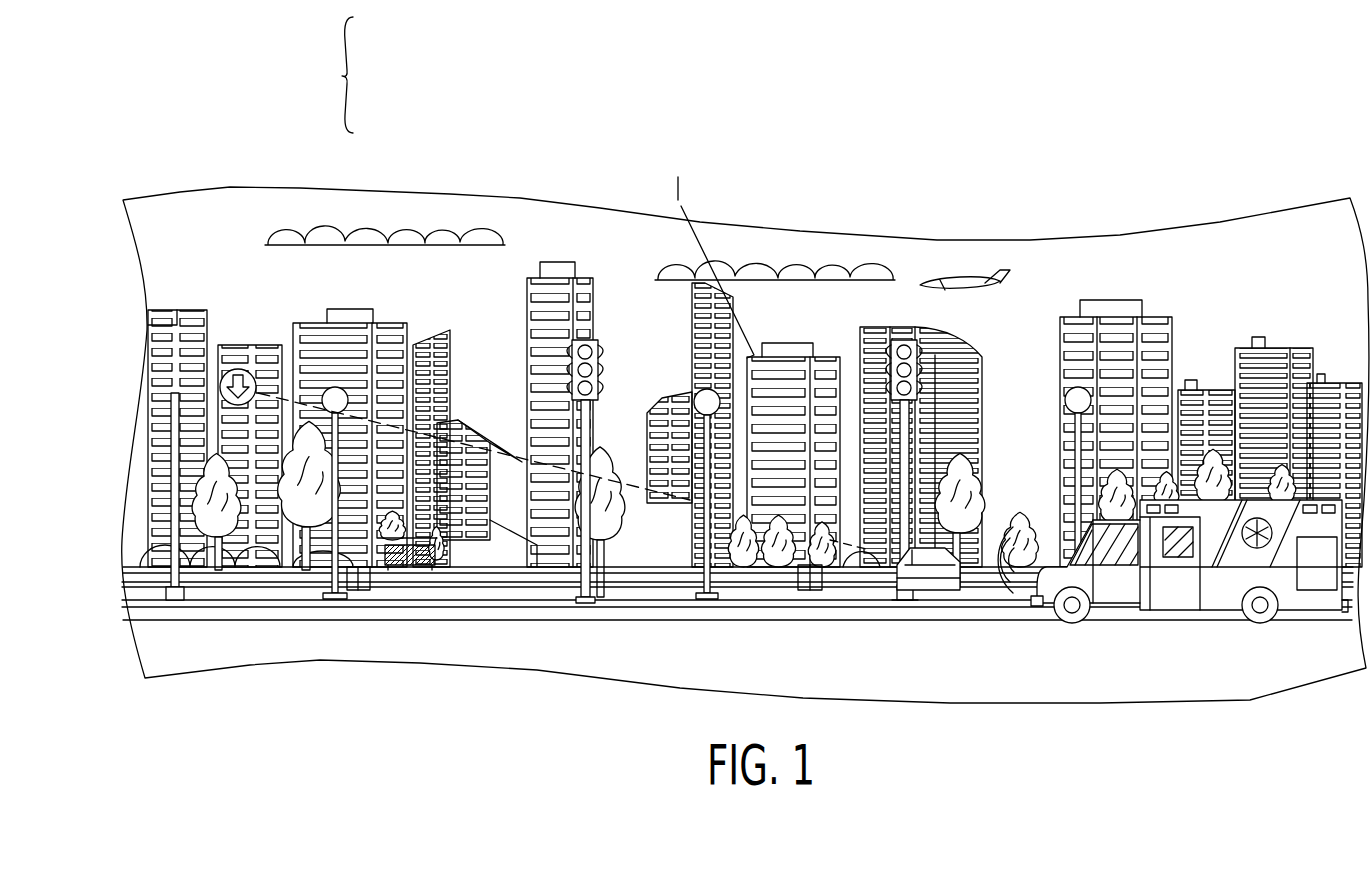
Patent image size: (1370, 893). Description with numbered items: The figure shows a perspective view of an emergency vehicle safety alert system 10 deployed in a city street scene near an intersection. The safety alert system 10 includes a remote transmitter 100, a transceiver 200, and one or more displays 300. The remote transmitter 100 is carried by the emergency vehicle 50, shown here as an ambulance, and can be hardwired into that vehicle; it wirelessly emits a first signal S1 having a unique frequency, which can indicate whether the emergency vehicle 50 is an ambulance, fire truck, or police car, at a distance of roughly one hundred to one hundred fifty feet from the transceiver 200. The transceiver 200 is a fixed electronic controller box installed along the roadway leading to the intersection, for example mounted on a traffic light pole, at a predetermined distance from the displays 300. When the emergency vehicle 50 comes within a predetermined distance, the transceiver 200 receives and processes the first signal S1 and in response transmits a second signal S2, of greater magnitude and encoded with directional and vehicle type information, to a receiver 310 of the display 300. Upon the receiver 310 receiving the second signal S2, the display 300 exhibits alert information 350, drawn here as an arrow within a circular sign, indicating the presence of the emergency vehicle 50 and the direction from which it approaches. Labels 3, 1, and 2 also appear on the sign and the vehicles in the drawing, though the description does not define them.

The emergency vehicle safety alert system 10 is at (355, 76).
The remote transmitter 100 is at (1036, 604).
The transceiver 200 is at (903, 596).
The display 300 is at (246, 369).
The receiver 310 is at (224, 400).
The alert information 350 is at (254, 375).
The traffic sign 3 is at (196, 441).
The emergency vehicle (ambulance) 1 is at (1171, 492).
The other vehicle 2 is at (911, 538).
The emergency vehicle 50 is at (1212, 533).
The first signal S1 is at (1007, 490).
The second signal S2 is at (482, 440).